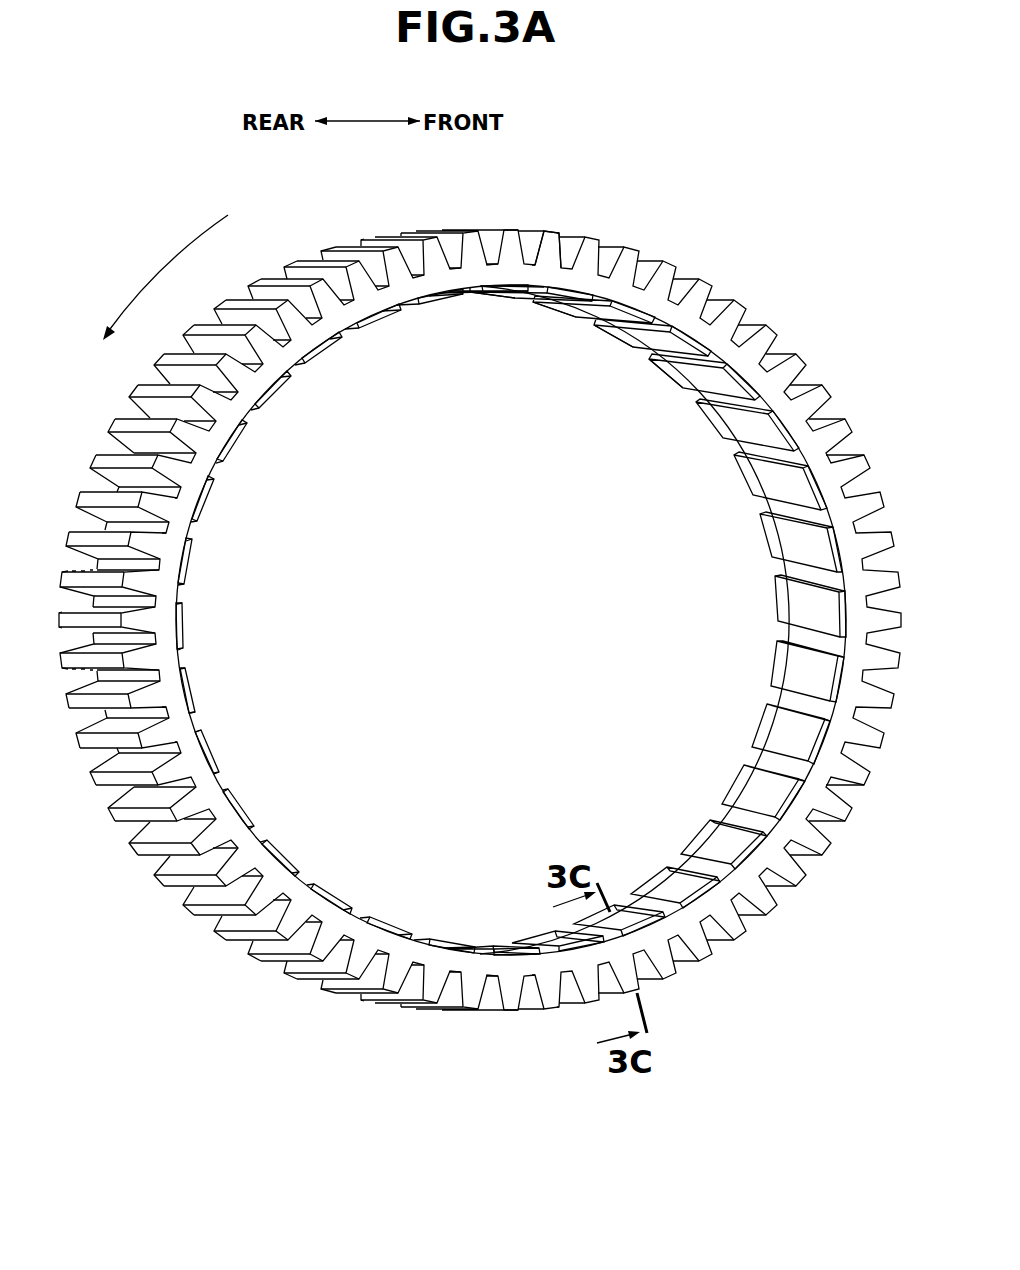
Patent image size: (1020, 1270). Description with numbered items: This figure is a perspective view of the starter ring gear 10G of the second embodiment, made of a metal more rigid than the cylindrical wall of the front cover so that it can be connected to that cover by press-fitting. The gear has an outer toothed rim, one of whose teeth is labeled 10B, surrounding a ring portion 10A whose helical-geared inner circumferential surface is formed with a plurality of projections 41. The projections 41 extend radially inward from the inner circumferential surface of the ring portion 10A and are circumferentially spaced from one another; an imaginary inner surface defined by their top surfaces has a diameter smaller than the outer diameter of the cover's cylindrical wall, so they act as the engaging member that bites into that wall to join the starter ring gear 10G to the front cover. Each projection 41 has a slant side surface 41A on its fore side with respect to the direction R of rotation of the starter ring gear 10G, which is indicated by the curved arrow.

The starter ring gear 10G is at (672, 233).
The gear tooth 10B is at (554, 232).
The ring portion 10A is at (370, 306).
The projections 41 is at (770, 740).
The slant side surface 41A is at (700, 400).
The direction of rotation R is at (168, 262).